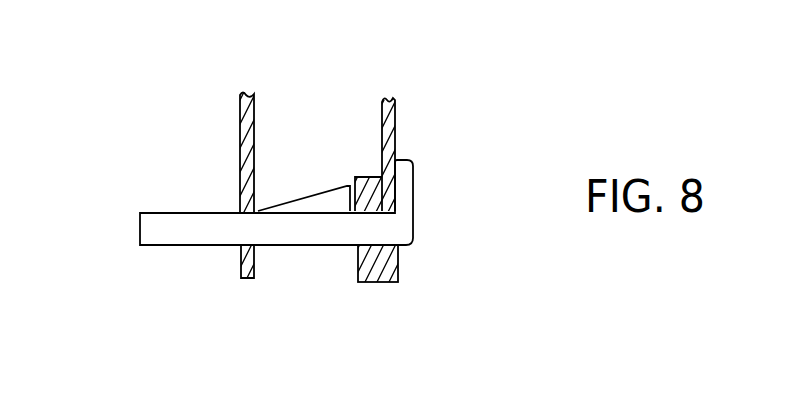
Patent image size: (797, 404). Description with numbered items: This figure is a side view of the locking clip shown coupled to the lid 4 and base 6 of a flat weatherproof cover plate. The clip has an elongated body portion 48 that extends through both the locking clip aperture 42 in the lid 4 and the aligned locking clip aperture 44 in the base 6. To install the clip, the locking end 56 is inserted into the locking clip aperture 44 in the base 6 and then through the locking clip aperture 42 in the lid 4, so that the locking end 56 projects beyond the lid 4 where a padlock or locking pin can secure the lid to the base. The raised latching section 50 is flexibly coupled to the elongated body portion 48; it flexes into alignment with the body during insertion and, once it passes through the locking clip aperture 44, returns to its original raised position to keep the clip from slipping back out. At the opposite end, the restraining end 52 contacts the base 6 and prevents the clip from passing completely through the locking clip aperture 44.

The lid 4 is at (249, 157).
The base 6 is at (382, 108).
The locking clip aperture 42 is at (254, 248).
The locking clip aperture 44 is at (397, 250).
The elongated body portion 48 is at (344, 228).
The raised latching section 50 is at (344, 196).
The restraining end 52 is at (405, 172).
The locking end 56 is at (150, 233).